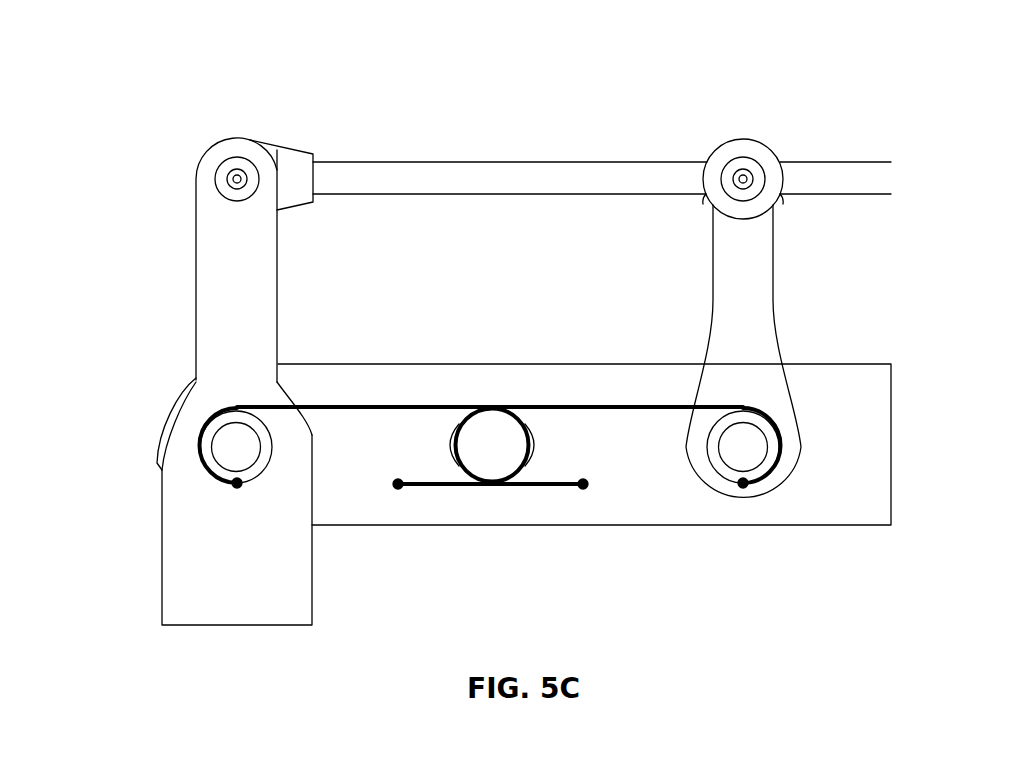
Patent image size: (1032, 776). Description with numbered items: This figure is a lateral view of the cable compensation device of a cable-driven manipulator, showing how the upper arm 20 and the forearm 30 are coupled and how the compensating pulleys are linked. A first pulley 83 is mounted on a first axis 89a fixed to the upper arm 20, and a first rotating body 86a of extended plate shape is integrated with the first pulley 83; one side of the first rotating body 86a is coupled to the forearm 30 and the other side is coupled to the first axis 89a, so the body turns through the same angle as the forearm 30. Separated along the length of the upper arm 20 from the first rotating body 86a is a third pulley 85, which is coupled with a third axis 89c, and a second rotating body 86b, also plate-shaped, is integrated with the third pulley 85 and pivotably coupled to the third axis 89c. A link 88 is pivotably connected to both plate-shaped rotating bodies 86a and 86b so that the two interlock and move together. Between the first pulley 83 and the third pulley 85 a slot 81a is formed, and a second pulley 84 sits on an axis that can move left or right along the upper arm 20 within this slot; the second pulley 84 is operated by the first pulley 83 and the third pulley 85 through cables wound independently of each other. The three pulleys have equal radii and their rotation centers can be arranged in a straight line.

The upper arm 20 is at (838, 513).
The forearm 30 is at (177, 552).
The slot 81a is at (547, 450).
The first pulley 83 is at (268, 428).
The second pulley 84 is at (493, 468).
The third pulley 85 is at (713, 428).
The first rotating body 86a is at (212, 283).
The second rotating body 86b is at (757, 272).
The link 88 is at (540, 168).
The first axis 89a is at (240, 450).
The third axis 89c is at (733, 453).